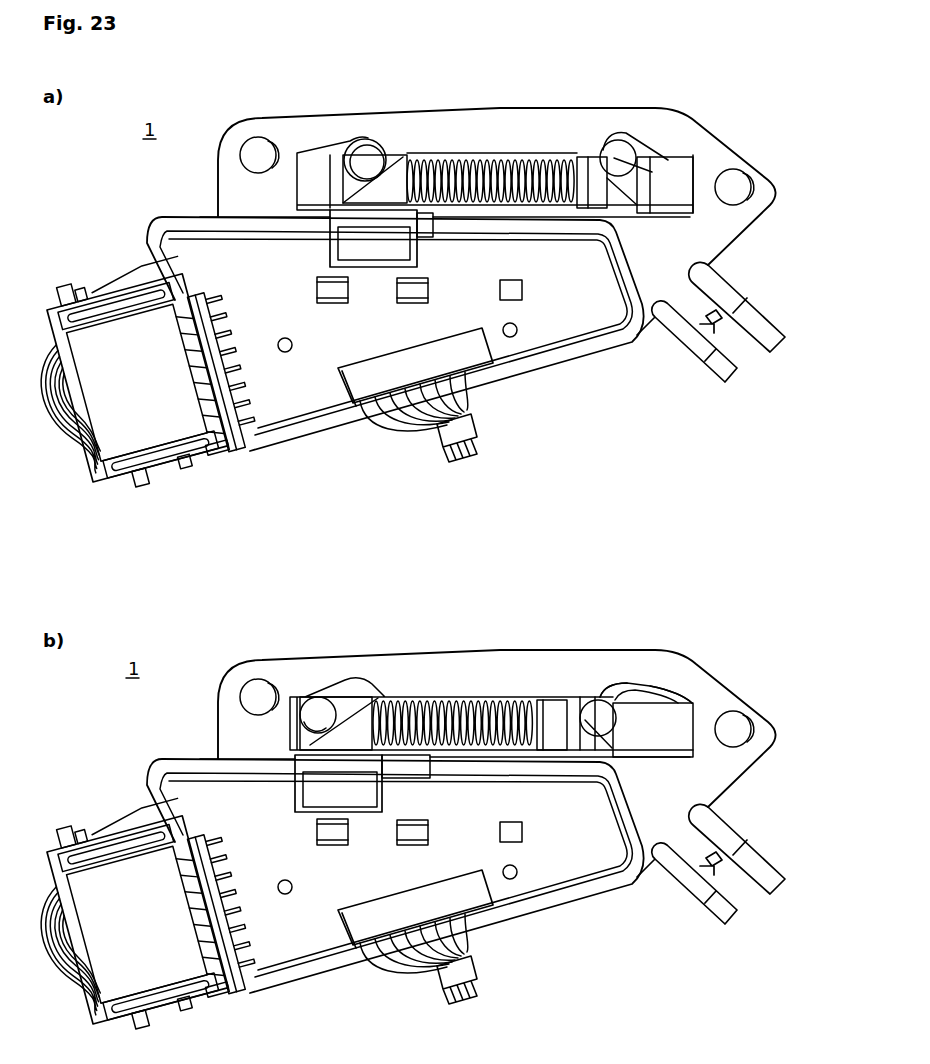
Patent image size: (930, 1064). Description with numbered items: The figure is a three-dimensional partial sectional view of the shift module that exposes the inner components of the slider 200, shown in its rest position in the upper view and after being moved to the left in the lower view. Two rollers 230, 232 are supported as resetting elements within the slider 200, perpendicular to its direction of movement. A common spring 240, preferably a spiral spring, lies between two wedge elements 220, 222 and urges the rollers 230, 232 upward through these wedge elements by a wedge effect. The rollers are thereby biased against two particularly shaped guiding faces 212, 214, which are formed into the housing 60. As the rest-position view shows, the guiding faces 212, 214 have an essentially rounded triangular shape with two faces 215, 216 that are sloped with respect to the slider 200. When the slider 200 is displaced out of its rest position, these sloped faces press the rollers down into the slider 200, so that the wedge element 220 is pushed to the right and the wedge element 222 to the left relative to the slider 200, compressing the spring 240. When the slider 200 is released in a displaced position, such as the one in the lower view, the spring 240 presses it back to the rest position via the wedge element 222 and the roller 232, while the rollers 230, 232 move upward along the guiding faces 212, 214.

The housing 60 is at (298, 137).
The slider 200 is at (643, 187).
The guiding face 212 is at (335, 150).
The guiding face 214 is at (647, 152).
The face 215 is at (608, 700).
The face 216 is at (655, 694).
The wedge element 220 is at (393, 183).
The wedge element 222 is at (585, 180).
The roller 230 is at (368, 145).
The roller 232 is at (620, 150).
The spring 240 is at (478, 165).